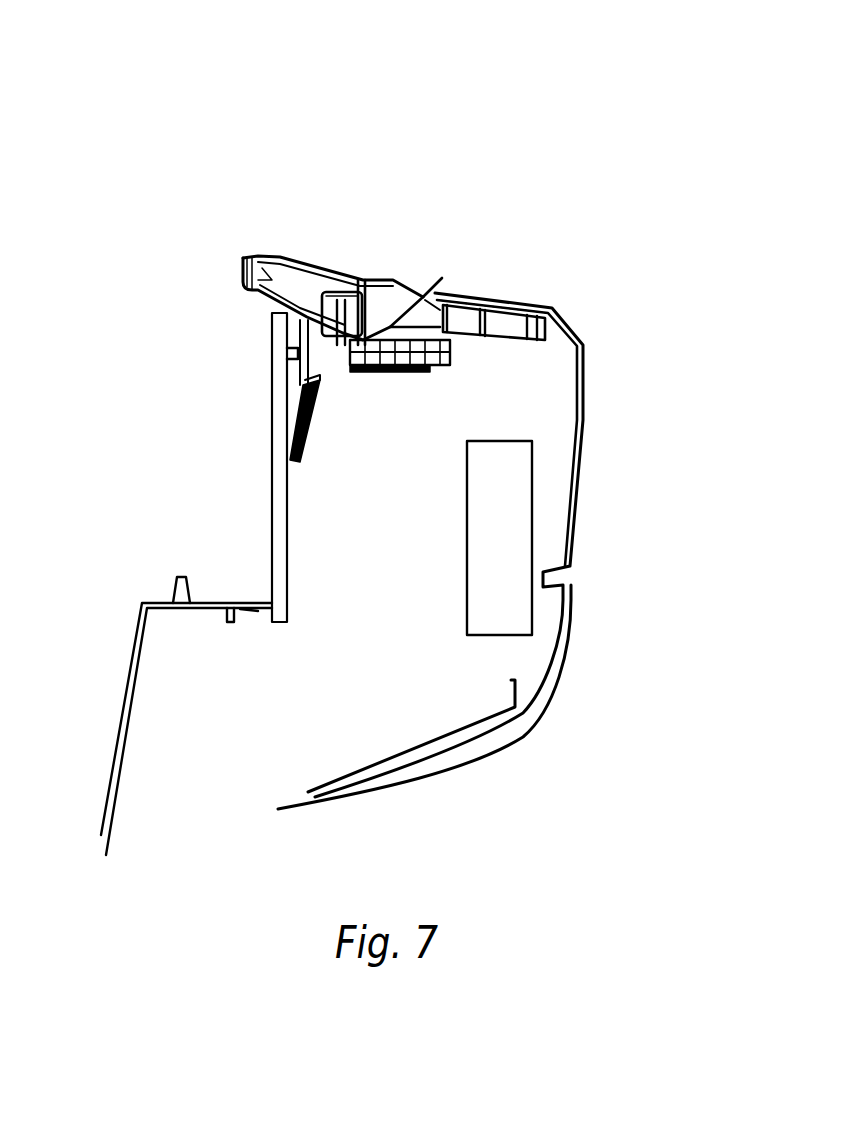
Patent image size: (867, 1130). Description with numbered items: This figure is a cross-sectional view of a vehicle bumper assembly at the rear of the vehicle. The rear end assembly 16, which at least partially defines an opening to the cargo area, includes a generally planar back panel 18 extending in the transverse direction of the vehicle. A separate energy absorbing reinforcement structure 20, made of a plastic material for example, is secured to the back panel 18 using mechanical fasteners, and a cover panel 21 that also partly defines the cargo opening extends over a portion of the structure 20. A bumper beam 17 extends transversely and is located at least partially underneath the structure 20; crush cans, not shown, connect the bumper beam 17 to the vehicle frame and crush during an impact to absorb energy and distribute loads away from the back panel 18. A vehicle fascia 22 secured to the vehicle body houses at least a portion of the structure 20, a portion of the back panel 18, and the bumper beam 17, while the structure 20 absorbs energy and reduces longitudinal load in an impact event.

The rear end assembly 16 is at (263, 463).
The bumper beam 17 is at (503, 590).
The back panel 18 is at (278, 593).
The energy absorbing reinforcement structure 20 is at (380, 320).
The cover panel 21 is at (325, 270).
The vehicle fascia 22 is at (581, 470).